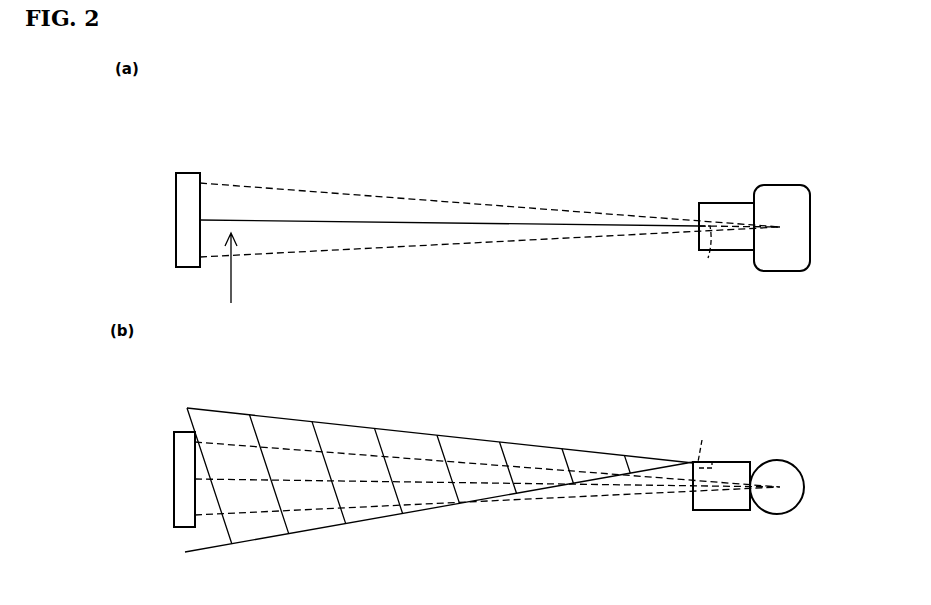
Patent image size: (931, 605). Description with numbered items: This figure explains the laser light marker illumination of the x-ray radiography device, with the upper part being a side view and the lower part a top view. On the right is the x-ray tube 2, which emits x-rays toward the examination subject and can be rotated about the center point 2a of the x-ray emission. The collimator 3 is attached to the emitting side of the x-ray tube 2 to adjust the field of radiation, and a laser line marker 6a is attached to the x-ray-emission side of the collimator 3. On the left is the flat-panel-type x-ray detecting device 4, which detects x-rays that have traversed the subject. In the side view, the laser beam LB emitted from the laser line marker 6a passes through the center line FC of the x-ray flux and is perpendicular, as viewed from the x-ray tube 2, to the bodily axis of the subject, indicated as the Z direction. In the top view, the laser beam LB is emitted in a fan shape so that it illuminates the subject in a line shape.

The x-ray tube 2 is at (783, 190).
The center point of the x-ray emission 2a is at (792, 226).
The collimator 3 is at (717, 208).
The flat-panel-type x-ray detecting device 4 is at (183, 210).
The laser line marker 6a is at (704, 347).
The laser beam LB is at (315, 220).
The center line of the x-ray flux FC is at (243, 480).
The Z direction Z is at (240, 268).